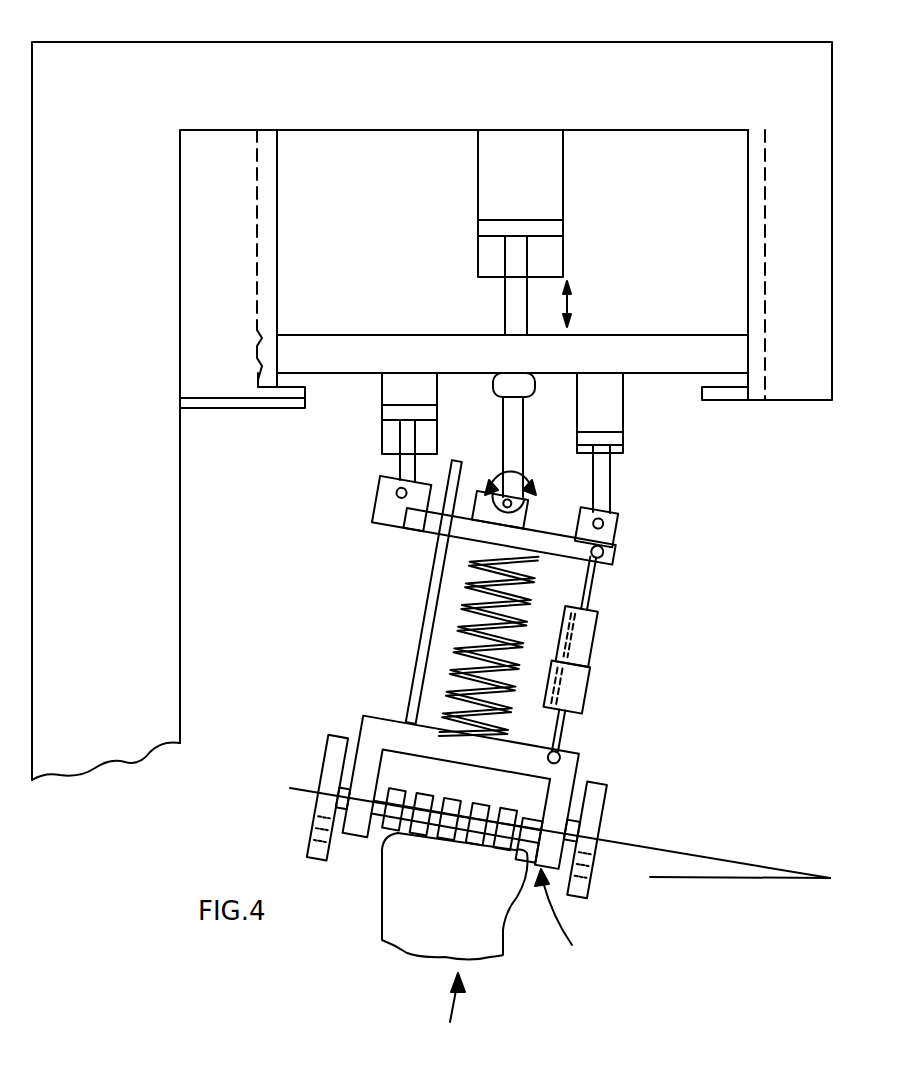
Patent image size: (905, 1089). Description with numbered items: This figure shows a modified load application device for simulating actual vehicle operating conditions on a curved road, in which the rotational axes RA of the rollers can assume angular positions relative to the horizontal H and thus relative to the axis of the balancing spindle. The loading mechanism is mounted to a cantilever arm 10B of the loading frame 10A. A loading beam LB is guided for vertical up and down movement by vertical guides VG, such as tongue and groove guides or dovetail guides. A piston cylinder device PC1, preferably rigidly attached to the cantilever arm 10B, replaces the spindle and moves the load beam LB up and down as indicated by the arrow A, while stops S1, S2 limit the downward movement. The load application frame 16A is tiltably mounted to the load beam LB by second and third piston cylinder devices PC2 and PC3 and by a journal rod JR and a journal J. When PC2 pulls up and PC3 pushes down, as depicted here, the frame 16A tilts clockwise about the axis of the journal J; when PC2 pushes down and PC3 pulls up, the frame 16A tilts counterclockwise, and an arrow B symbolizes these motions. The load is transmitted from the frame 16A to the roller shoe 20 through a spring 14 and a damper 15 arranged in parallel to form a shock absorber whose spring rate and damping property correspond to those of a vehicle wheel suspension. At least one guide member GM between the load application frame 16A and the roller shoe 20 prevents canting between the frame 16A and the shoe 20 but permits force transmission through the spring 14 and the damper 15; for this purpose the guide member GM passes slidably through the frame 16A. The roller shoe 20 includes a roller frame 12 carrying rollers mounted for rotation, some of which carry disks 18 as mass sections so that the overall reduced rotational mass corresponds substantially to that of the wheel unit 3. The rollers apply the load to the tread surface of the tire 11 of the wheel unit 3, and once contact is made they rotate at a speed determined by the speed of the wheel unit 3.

The cantilever arm 10B is at (443, 52).
The loading frame 10A is at (158, 553).
The vertical guides VG is at (270, 258).
The loading beam LB is at (608, 348).
The piston cylinder device PC1 is at (556, 198).
The arrow A is at (567, 306).
The stop S1 is at (283, 405).
The stop S2 is at (715, 398).
The second piston cylinder device PC2 is at (381, 440).
The third piston cylinder device PC3 is at (617, 415).
The journal rod JR is at (505, 434).
The arrow B is at (520, 472).
The journal J is at (530, 503).
The load application frame 16A is at (617, 555).
The guide member GM is at (421, 602).
The spring 14 is at (527, 600).
The damper 15 is at (577, 692).
The roller frame 12 is at (557, 808).
The roller shoe 20 is at (489, 875).
The disks 18 is at (340, 746).
The rotational axes RA is at (668, 850).
The horizontal H is at (674, 876).
The tire 11 is at (402, 912).
The wheel unit 3 is at (456, 1016).